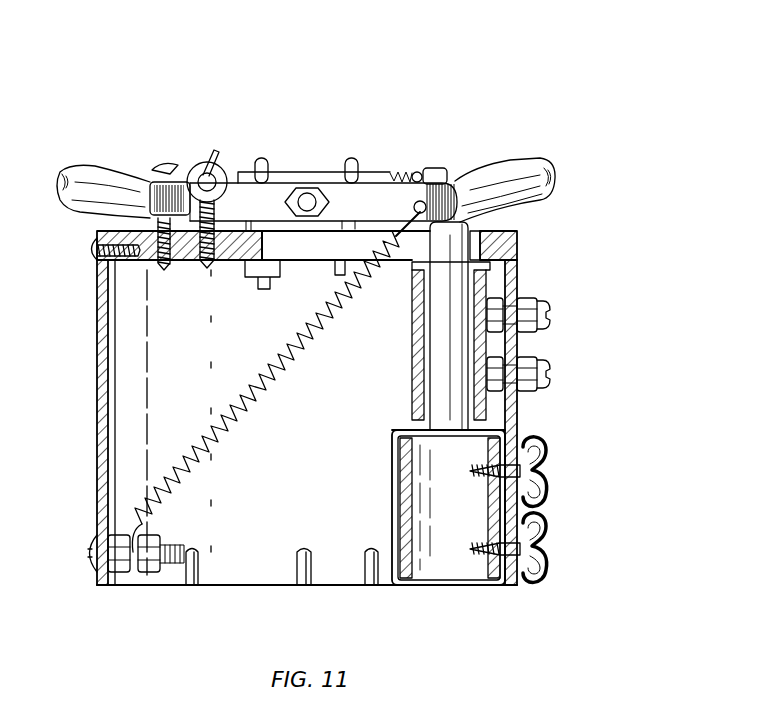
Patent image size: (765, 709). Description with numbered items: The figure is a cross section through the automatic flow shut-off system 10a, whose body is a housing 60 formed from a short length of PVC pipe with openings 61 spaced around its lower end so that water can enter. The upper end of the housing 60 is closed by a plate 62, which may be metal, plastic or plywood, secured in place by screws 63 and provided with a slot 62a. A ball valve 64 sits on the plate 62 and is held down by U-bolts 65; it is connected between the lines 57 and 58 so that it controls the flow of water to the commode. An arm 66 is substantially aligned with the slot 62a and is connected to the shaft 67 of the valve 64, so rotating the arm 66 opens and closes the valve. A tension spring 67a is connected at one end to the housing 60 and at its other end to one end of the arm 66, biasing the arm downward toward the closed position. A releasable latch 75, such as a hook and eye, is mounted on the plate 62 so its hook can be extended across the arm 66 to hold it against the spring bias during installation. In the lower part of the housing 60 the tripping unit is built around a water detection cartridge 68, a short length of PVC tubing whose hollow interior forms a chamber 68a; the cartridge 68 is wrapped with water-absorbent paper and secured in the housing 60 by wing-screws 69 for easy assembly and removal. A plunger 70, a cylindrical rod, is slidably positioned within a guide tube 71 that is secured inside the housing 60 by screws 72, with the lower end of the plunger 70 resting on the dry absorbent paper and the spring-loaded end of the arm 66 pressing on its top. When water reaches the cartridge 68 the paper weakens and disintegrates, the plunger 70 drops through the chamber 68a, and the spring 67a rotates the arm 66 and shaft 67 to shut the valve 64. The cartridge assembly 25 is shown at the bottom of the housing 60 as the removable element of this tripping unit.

The automatic flow shut-off system 10a is at (176, 72).
The bait cartridge assembly 25 is at (395, 430).
The line 57 is at (520, 158).
The line 58 is at (82, 166).
The housing 60 is at (97, 437).
The openings 61 is at (198, 585).
The plate 62 is at (504, 222).
The slot 62a is at (290, 252).
The screws 63 is at (88, 256).
The ball valve 64 is at (298, 172).
The U-bolts 65 is at (258, 158).
The arm 66 is at (148, 197).
The shaft 67 is at (307, 198).
The tension spring 67a is at (243, 430).
The water detection cartridge 68 is at (424, 507).
The chamber 68a is at (430, 513).
The wing-screws 69 is at (549, 478).
The plunger 70 is at (430, 385).
The guide tube 71 is at (414, 350).
The screws 72 is at (550, 312).
The releasable latch 75 is at (203, 162).